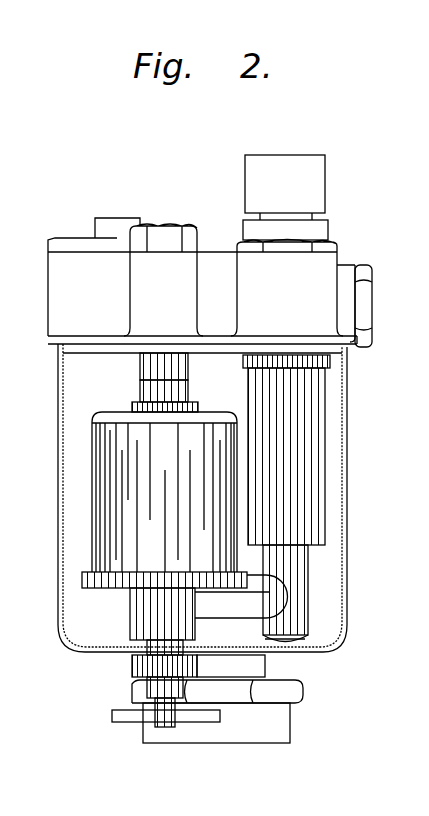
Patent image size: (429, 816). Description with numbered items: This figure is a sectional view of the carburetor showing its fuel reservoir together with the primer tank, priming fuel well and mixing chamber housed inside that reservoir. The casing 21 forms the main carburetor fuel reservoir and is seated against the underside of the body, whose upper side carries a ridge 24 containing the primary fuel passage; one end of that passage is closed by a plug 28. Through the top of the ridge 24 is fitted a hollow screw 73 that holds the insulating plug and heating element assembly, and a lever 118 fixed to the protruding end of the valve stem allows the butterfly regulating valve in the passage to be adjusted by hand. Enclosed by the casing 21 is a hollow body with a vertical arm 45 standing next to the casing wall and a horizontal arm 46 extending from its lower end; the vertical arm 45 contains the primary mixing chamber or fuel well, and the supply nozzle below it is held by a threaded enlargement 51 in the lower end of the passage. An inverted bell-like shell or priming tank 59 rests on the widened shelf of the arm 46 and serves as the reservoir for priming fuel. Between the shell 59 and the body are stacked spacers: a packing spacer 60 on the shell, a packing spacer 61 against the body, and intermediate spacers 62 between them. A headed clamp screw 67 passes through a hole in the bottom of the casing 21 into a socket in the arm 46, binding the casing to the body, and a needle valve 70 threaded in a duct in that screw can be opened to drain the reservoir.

The lever 118 is at (108, 222).
The ridge 24 is at (210, 257).
The hollow screw 73 is at (323, 247).
The plug 28 is at (365, 297).
The casing 21 is at (60, 505).
The spacer 60 is at (148, 365).
The intermediate spacers 62 is at (143, 392).
The spacer 61 is at (197, 407).
The shell or priming tank 59 is at (92, 478).
The arm 45 is at (323, 415).
The arm 46 is at (250, 620).
The threaded enlargement 51 is at (307, 643).
The clamp screw 67 is at (132, 665).
The needle valve 70 is at (150, 705).